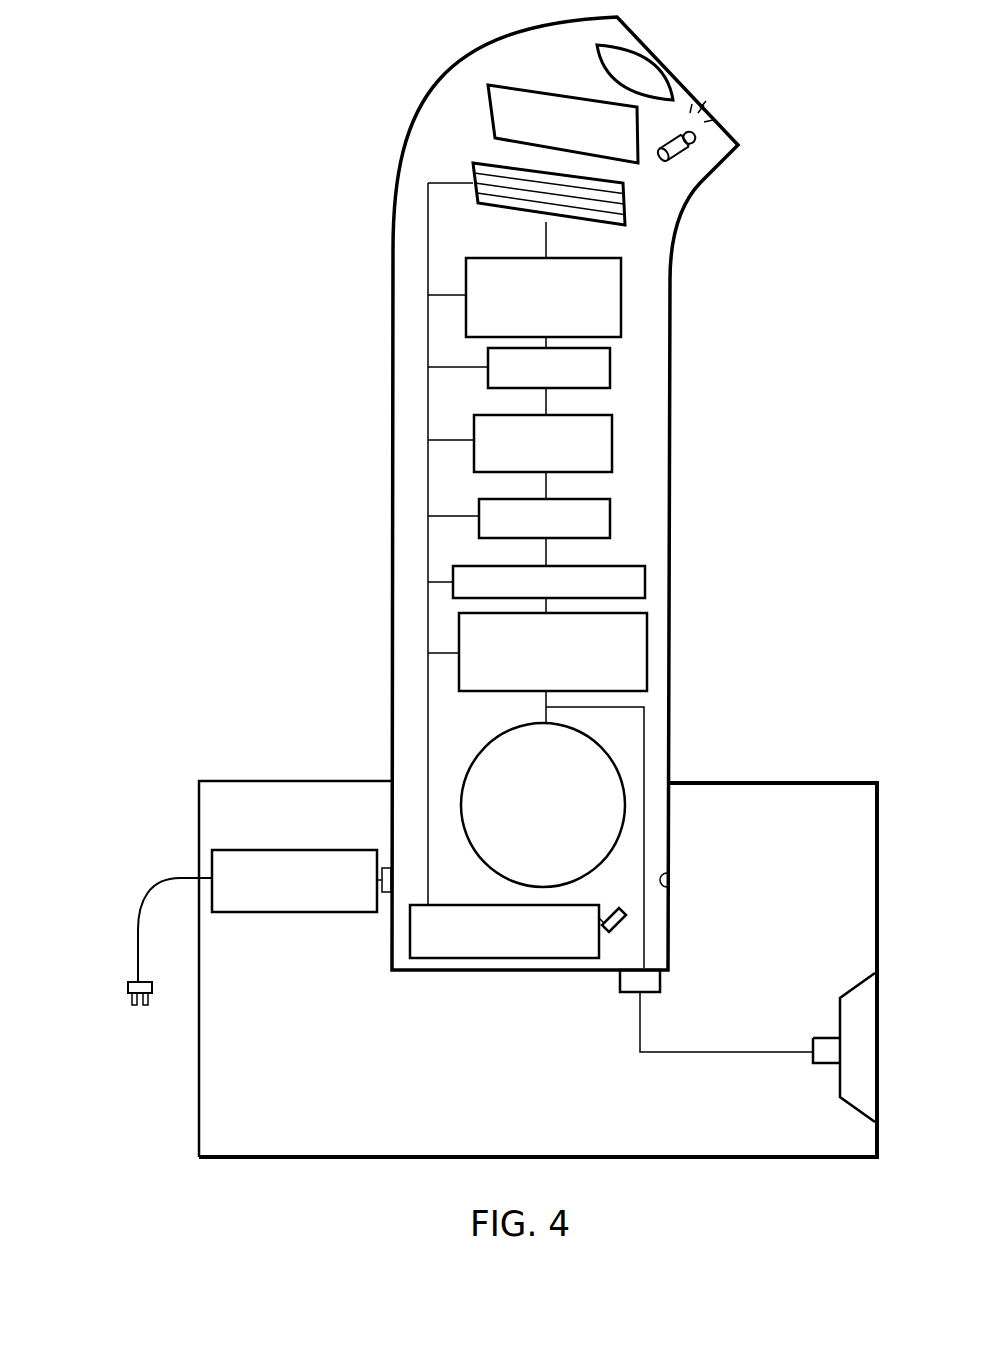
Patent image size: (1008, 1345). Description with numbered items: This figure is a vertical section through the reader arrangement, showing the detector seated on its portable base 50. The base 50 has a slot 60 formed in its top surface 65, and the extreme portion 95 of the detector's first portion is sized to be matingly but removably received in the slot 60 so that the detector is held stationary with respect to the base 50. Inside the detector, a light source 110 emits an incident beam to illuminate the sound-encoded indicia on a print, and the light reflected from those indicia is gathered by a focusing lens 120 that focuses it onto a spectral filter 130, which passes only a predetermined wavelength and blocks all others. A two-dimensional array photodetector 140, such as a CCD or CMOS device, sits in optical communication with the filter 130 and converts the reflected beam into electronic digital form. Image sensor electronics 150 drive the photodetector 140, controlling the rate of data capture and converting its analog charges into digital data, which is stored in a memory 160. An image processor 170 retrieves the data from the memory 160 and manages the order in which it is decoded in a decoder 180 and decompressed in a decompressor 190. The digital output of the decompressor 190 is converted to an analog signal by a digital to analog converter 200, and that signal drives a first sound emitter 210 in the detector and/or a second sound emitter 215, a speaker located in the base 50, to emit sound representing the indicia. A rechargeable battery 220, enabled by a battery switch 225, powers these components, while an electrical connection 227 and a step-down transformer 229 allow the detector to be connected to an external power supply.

The portable base 50 is at (877, 812).
The slot 60 is at (662, 887).
The top surface 65 is at (800, 783).
The extreme portion 95 is at (391, 808).
The light source 110 is at (712, 166).
The focusing lens 120 is at (600, 63).
The spectral filter 130 is at (498, 116).
The two-dimensional array photodetector 140 is at (625, 205).
The image sensor electronics 150 is at (621, 290).
The memory 160 is at (610, 367).
The image processor 170 is at (612, 432).
The decoder 180 is at (610, 514).
The decompressor 190 is at (645, 578).
The digital to analog converter 200 is at (647, 636).
The first sound emitter 210 is at (485, 747).
The second sound emitter 215 is at (858, 1000).
The rechargeable battery 220 is at (416, 971).
The battery switch 225 is at (610, 933).
The electrical connection 227 is at (133, 978).
The step-down transformer 229 is at (291, 912).